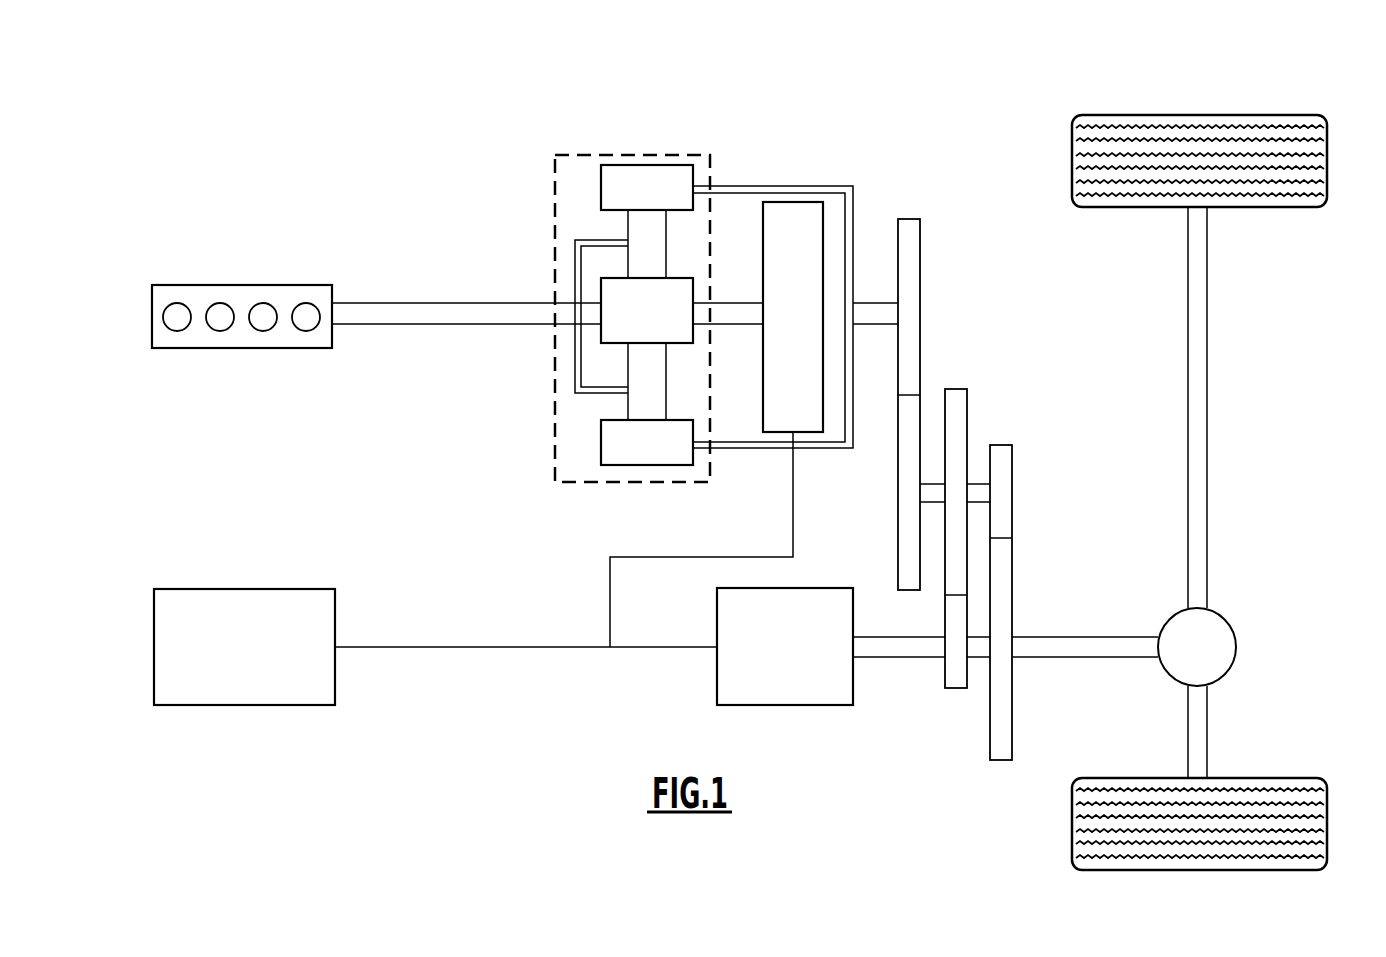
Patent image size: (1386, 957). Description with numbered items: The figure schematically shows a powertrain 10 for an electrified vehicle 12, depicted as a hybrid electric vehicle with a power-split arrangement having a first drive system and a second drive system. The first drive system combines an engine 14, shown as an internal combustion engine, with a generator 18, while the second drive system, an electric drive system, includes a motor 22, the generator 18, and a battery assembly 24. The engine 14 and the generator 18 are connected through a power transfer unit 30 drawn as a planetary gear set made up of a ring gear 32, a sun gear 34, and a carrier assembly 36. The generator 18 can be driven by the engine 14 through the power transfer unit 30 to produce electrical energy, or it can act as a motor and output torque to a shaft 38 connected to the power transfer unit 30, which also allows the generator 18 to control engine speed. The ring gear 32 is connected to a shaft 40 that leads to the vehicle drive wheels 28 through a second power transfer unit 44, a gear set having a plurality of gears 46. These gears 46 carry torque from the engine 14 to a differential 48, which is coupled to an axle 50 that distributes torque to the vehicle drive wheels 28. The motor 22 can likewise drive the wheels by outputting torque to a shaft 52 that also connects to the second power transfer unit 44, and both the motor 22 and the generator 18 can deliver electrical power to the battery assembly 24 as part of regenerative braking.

The powertrain 10 is at (392, 178).
The electrified vehicle 12 is at (822, 106).
The engine 14 is at (168, 285).
The generator 18 is at (790, 202).
The motor 22 is at (857, 688).
The battery assembly 24 is at (172, 589).
The vehicle drive wheels 28 is at (1327, 820).
The power transfer unit 30 is at (555, 438).
The ring gear 32 is at (601, 188).
The sun gear 34 is at (601, 290).
The carrier assembly 36 is at (575, 378).
The shaft 38 is at (729, 302).
The shaft 40 is at (873, 303).
The second power transfer unit 44 is at (1003, 342).
The gears 46 is at (921, 356).
The differential 48 is at (1237, 667).
The axle 50 is at (1208, 397).
The shaft 52 is at (910, 657).